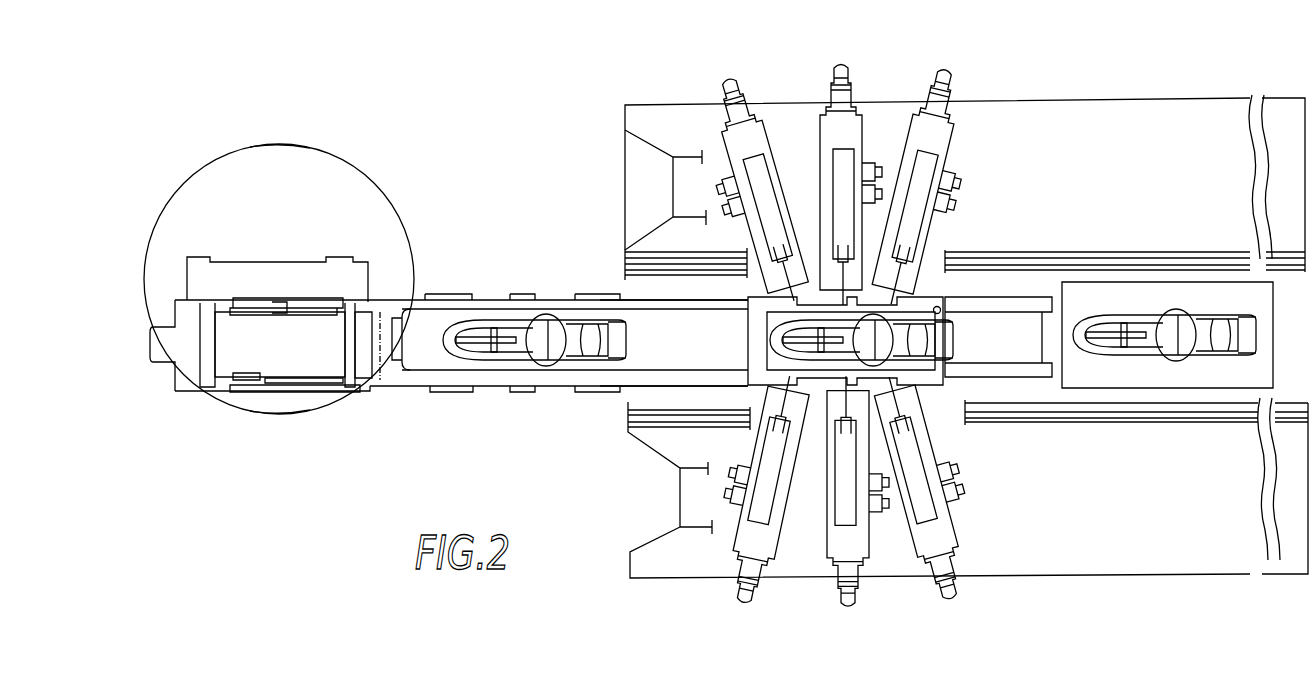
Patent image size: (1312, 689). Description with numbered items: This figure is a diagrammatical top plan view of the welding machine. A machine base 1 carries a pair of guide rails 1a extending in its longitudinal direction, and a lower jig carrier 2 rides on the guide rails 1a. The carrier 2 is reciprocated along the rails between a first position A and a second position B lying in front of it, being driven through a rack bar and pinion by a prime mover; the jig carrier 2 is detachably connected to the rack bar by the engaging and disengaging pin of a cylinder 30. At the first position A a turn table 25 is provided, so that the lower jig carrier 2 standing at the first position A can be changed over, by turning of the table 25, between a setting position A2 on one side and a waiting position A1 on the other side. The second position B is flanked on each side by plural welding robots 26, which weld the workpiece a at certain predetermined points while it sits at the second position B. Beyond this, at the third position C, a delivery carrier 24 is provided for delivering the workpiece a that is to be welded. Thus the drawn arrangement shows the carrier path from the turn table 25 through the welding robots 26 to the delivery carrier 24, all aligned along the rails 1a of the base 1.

The machine base 1 is at (498, 390).
The guide rails 1a is at (670, 375).
The lower jig carrier 2 is at (938, 262).
The delivery carrier 24 is at (1258, 370).
The turn table 25 is at (196, 183).
The welding robots 26 is at (845, 336).
The cylinder 30 is at (941, 312).
The first position A is at (365, 146).
The waiting position A1 is at (277, 405).
The setting position A2 is at (283, 162).
The second position B is at (739, 281).
The third position C is at (1140, 282).
The workpiece a is at (1178, 300).